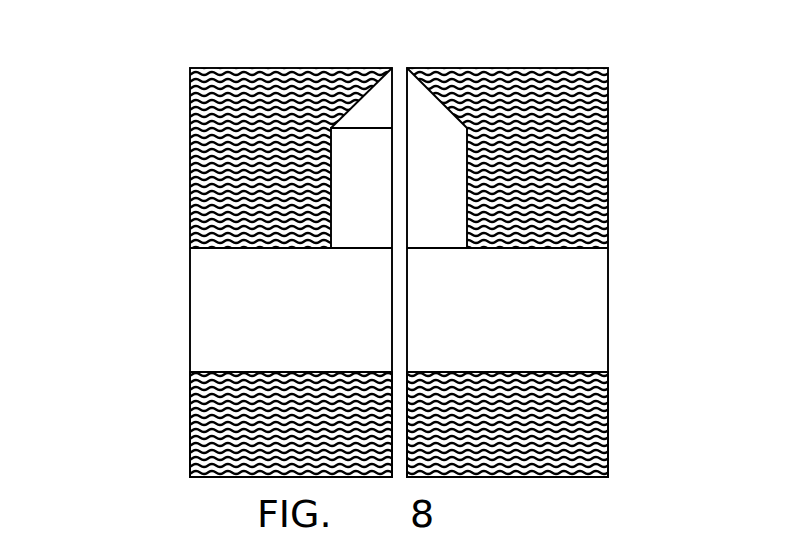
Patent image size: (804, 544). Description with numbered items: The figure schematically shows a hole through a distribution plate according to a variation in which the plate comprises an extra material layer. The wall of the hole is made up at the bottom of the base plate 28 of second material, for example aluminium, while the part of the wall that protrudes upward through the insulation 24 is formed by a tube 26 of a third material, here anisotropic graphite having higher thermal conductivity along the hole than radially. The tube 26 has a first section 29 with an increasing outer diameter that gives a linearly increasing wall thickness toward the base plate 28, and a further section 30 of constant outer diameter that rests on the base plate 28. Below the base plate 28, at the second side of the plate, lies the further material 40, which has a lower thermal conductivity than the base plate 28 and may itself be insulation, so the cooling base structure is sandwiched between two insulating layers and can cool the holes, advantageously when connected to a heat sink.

The insulation 24 is at (190, 191).
The tube of third material 26 is at (470, 183).
The base plate 28 is at (317, 320).
The first section 29 is at (370, 113).
The further section 30 is at (381, 218).
The further material 40 is at (190, 437).